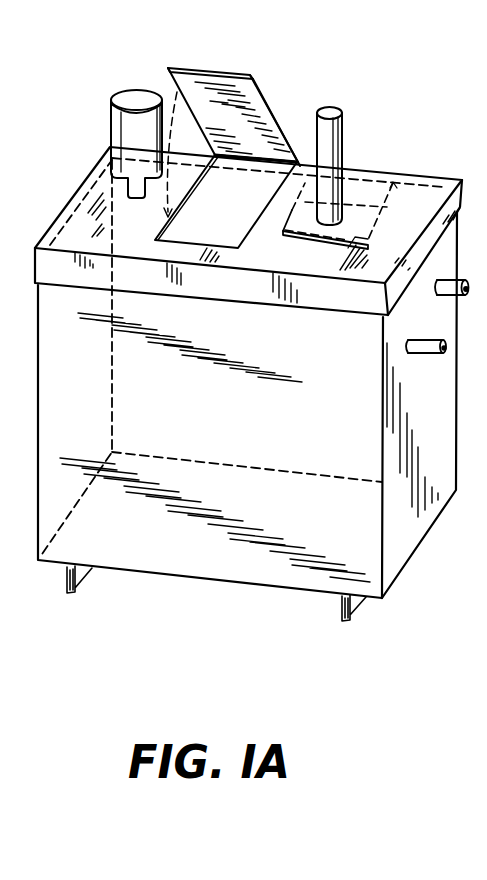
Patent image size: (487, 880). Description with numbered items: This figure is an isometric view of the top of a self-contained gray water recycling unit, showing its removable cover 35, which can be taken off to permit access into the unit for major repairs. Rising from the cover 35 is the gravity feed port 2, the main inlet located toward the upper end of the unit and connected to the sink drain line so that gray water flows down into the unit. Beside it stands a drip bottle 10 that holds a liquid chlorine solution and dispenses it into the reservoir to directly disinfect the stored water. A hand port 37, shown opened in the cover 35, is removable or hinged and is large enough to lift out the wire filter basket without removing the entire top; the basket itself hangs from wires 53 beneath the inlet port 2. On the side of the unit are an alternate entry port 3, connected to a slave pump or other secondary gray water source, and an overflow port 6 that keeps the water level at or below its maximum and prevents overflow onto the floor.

The removable cover 35 is at (72, 193).
The drip bottle 10 is at (123, 127).
The hand port 37 is at (170, 62).
The gravity feed port 2 is at (330, 136).
The wires 53 is at (400, 200).
The alternate entry port 3 is at (444, 291).
The overflow port 6 is at (412, 353).